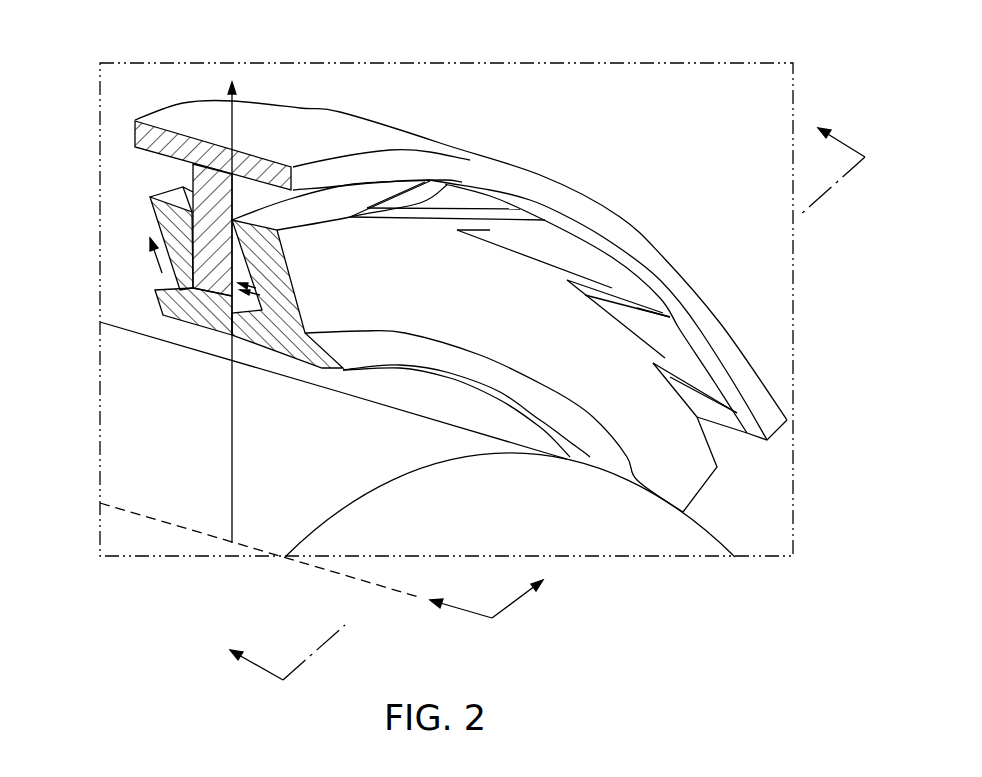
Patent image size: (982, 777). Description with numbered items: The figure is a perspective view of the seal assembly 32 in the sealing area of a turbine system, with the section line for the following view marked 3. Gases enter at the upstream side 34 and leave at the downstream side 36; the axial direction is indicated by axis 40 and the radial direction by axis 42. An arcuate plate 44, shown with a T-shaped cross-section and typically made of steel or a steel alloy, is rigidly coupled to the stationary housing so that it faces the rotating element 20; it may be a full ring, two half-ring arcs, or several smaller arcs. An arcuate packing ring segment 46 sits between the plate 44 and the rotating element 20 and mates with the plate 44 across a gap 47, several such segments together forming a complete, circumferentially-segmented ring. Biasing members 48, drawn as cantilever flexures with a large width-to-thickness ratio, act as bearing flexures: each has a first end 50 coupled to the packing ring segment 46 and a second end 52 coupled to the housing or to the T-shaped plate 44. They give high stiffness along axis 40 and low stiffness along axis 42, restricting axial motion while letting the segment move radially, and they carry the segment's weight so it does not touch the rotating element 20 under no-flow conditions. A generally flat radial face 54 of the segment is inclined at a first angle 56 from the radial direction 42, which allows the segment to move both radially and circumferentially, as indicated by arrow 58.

The rotating element 20 is at (572, 537).
The seal assembly 32 is at (657, 51).
The upstream side 34 is at (133, 278).
The downstream side 36 is at (743, 512).
The axis 40 is at (465, 612).
The axis 42 is at (233, 460).
The arcuate plate 44 is at (210, 183).
The arcuate packing ring segment 46 is at (160, 314).
The gap 47 is at (240, 305).
The biasing members 48 is at (367, 200).
The first end 50 is at (277, 233).
The second end 52 is at (447, 183).
The radial face 54 is at (292, 335).
The first angle 56 is at (243, 295).
The arrow 58 is at (160, 258).
The section line 3- 3 is at (538, 388).